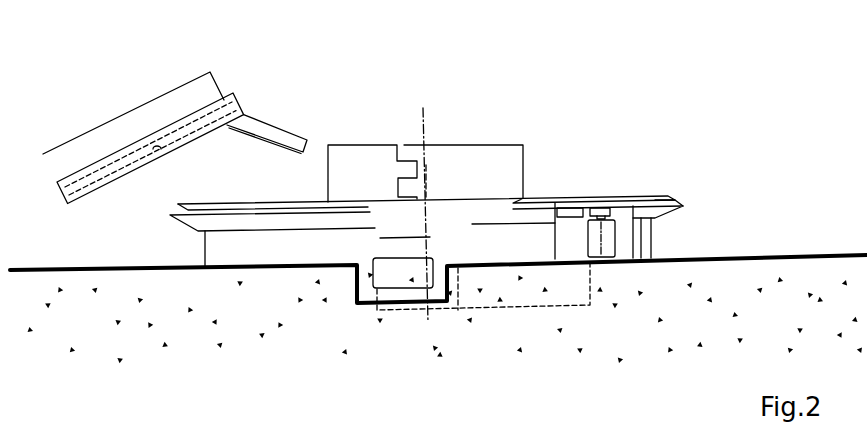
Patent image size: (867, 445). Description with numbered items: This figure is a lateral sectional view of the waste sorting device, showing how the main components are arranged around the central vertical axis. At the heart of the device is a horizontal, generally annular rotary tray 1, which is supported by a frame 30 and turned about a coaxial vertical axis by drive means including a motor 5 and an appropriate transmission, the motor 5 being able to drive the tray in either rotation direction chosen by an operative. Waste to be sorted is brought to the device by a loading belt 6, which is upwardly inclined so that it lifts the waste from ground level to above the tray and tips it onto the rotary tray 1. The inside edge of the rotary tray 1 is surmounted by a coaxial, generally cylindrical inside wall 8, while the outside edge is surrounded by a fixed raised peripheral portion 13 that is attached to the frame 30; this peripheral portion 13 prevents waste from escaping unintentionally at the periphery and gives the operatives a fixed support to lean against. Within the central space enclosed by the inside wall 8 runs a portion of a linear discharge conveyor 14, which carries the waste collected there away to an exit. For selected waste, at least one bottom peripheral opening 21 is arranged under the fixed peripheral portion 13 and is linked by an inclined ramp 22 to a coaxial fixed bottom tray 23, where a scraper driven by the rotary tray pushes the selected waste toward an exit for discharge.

The rotary tray 1 is at (553, 197).
The motor 5 is at (593, 245).
The loading belt 6 is at (157, 115).
The inside wall 8 is at (440, 160).
The fixed raised peripheral portion 13 is at (657, 195).
The linear discharge conveyor 14 is at (405, 277).
The bottom peripheral opening 21 is at (683, 200).
The inclined ramp 22 is at (662, 221).
The fixed bottom tray 23 is at (640, 250).
The frame 30 is at (257, 253).